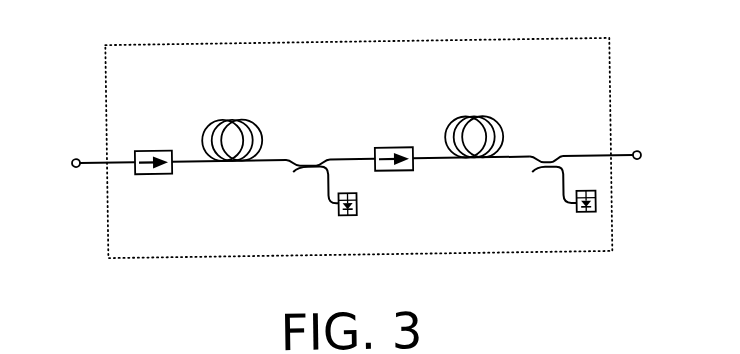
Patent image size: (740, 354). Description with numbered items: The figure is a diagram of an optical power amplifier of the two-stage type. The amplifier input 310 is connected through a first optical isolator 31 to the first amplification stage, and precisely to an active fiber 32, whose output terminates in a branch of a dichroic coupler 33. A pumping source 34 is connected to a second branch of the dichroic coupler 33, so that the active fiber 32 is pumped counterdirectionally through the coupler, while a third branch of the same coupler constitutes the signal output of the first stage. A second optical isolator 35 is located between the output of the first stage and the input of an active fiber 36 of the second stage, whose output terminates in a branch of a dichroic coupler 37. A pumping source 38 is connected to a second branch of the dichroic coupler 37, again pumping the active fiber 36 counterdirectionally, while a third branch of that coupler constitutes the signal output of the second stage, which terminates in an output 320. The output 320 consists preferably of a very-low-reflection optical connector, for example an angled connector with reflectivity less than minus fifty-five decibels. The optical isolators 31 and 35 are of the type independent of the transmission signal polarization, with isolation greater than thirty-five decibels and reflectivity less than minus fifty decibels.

The amplifier input 310 is at (77, 146).
The first optical isolator 31 is at (157, 147).
The active fiber 32 is at (230, 113).
The dichroic coupler 33 is at (311, 149).
The pumping source 34 is at (347, 219).
The second optical isolator 35 is at (397, 146).
The active fiber 36 is at (473, 111).
The dichroic coupler 37 is at (550, 156).
The pumping source 38 is at (587, 220).
The output 320 is at (638, 149).